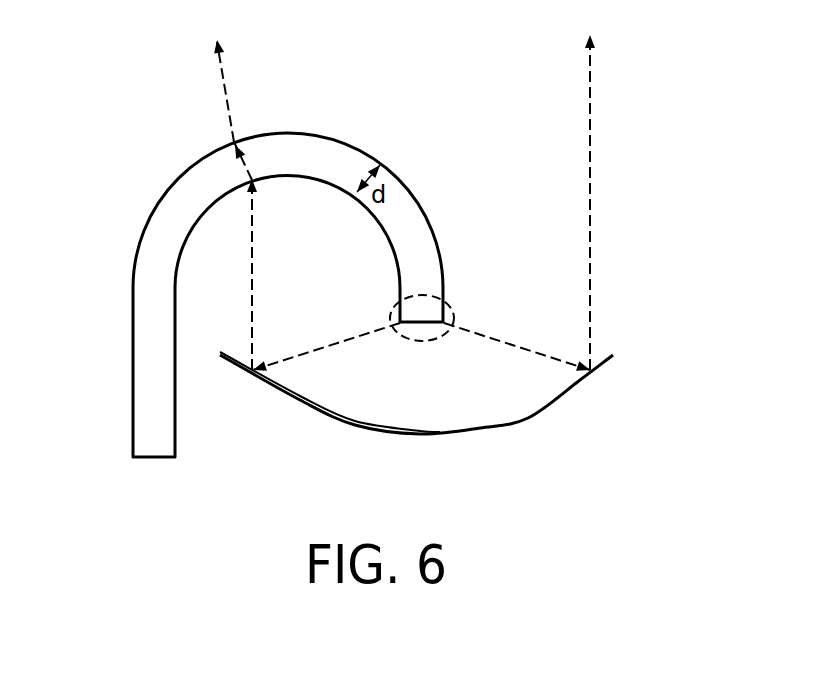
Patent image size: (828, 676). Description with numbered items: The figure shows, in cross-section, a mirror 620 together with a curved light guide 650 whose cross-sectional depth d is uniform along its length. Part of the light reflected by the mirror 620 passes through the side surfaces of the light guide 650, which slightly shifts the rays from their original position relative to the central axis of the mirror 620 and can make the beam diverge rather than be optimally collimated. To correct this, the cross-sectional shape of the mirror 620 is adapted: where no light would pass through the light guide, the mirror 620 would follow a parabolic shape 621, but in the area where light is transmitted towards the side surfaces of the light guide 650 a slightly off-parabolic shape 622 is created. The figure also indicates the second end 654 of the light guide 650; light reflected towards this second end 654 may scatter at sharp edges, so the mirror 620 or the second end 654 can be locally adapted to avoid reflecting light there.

The light guide 650 is at (141, 313).
The second end of the light guide 654 is at (455, 313).
The mirror 620 is at (528, 421).
The parabolic shape 621 is at (287, 392).
The off-parabolic shape 622 is at (259, 392).